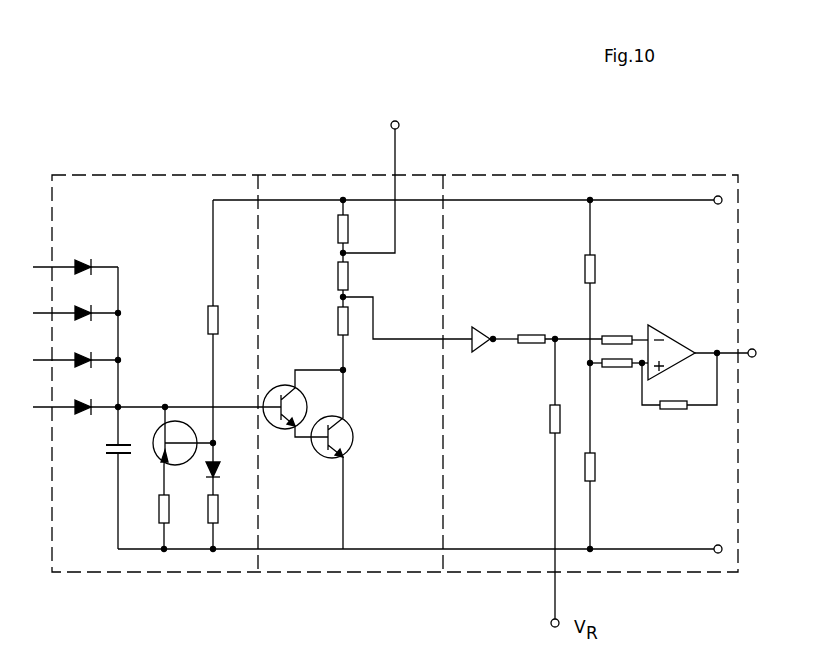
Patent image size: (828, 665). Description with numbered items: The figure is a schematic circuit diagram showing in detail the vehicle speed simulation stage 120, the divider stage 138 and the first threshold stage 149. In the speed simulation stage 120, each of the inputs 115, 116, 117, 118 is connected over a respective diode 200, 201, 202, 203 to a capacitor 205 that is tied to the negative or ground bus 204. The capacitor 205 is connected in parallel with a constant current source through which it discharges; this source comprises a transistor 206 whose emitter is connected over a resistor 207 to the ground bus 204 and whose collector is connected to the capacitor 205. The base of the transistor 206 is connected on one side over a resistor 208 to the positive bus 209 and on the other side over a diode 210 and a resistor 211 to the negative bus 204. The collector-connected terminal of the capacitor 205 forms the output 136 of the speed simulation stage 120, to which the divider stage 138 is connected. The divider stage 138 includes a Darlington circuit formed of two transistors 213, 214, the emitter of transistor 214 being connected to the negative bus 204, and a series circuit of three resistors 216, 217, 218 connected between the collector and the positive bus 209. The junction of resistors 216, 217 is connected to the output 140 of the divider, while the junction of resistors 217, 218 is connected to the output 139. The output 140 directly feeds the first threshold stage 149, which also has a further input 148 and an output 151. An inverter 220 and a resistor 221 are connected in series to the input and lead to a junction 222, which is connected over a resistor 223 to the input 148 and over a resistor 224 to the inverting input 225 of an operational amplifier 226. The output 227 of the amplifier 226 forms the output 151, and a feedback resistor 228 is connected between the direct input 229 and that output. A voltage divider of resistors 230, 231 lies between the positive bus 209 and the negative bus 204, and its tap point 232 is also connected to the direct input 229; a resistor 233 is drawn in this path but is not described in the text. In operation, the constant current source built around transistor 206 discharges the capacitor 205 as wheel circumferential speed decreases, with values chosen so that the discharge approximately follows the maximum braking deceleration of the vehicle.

The speed simulation stage 120 is at (134, 175).
The output of the vehicle speed simulation stage 136 is at (257, 402).
The divider stage 138 is at (300, 175).
The output 139 is at (396, 175).
The first threshold stage 149 is at (572, 175).
The positive bus 209 is at (232, 199).
The negative or ground bus 204 is at (126, 549).
The input 115 is at (52, 268).
The input 116 is at (52, 314).
The input 117 is at (52, 361).
The input 118 is at (52, 408).
The diode 200 is at (84, 262).
The diode 201 is at (84, 308).
The diode 202 is at (84, 355).
The diode 203 is at (84, 402).
The capacitor 205 is at (105, 445).
The transistor 206 is at (182, 422).
The resistor 207 is at (193, 484).
The resistor 208 is at (208, 312).
The diode 210 is at (215, 449).
The resistor 211 is at (216, 510).
The transistor 213 is at (273, 428).
The transistor 214 is at (350, 426).
The resistor 216 is at (340, 318).
The resistor 217 is at (340, 273).
The resistor 218 is at (340, 226).
The output of the divider stage 140 is at (470, 338).
The inverter 220 is at (478, 351).
The resistor 221 is at (526, 344).
The junction 222 is at (556, 337).
The resistor 223 is at (550, 410).
The further input 148 is at (554, 572).
The resistor 230 is at (593, 270).
The resistor 231 is at (594, 464).
The tap point 232 is at (589, 364).
The resistor 224 is at (612, 337).
The resistor 233 is at (606, 366).
The direct input 229 is at (643, 367).
The inverting input 225 is at (646, 325).
The operational amplifier 226 is at (672, 345).
The output of operational amplifier 227 is at (714, 352).
The feedback resistor 228 is at (672, 410).
The output 151 is at (750, 360).